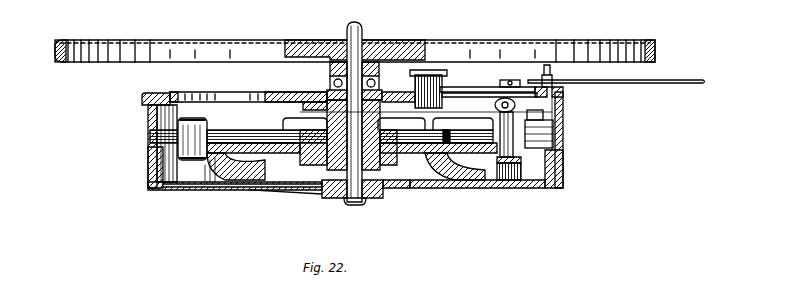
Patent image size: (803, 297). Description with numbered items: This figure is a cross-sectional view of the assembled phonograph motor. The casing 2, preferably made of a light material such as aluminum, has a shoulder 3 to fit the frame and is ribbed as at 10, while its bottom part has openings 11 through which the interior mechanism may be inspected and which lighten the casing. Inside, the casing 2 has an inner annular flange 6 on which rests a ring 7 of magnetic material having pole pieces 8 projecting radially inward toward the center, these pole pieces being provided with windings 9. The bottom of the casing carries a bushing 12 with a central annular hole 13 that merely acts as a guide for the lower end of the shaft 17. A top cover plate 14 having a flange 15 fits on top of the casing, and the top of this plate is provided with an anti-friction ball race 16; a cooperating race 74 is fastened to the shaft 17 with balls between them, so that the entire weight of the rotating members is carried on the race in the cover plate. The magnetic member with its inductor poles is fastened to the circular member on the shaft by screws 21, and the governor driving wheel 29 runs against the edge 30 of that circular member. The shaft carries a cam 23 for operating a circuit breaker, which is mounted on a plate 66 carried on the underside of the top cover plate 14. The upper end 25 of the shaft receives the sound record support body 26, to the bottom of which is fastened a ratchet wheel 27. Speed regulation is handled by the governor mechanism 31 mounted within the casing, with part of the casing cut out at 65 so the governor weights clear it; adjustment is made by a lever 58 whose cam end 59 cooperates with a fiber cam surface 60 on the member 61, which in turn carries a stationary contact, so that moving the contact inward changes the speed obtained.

The casing 2 is at (563, 165).
The shoulder 3 is at (147, 105).
The inner annular flange 6 is at (148, 156).
The ring 7 is at (160, 132).
The pole pieces 8 is at (213, 130).
The windings 9 is at (190, 118).
The ribs 10 is at (300, 193).
The openings 11 is at (180, 190).
The bushing 12 is at (330, 199).
The central annular hole 13 is at (370, 203).
The top cover plate 14 is at (248, 99).
The flange 15 is at (146, 93).
The anti-friction ball race 16 is at (330, 84).
The shaft 17 is at (328, 162).
The screws 21 is at (440, 160).
The cam 23 is at (371, 122).
The upper end of shaft 25 is at (362, 47).
The sound record support body 26 is at (481, 58).
The ratchet wheel 27 is at (423, 57).
The governor driving wheel 29 is at (520, 163).
The edge of circular member 30 is at (216, 188).
The governor mechanism 31 is at (505, 163).
The lever 58 is at (662, 84).
The cam end 59 is at (542, 78).
The cam surface 60 is at (512, 84).
The member 61 is at (472, 87).
The cut-out 65 is at (563, 112).
The plate 66 is at (303, 108).
The cooperating race 74 is at (373, 84).